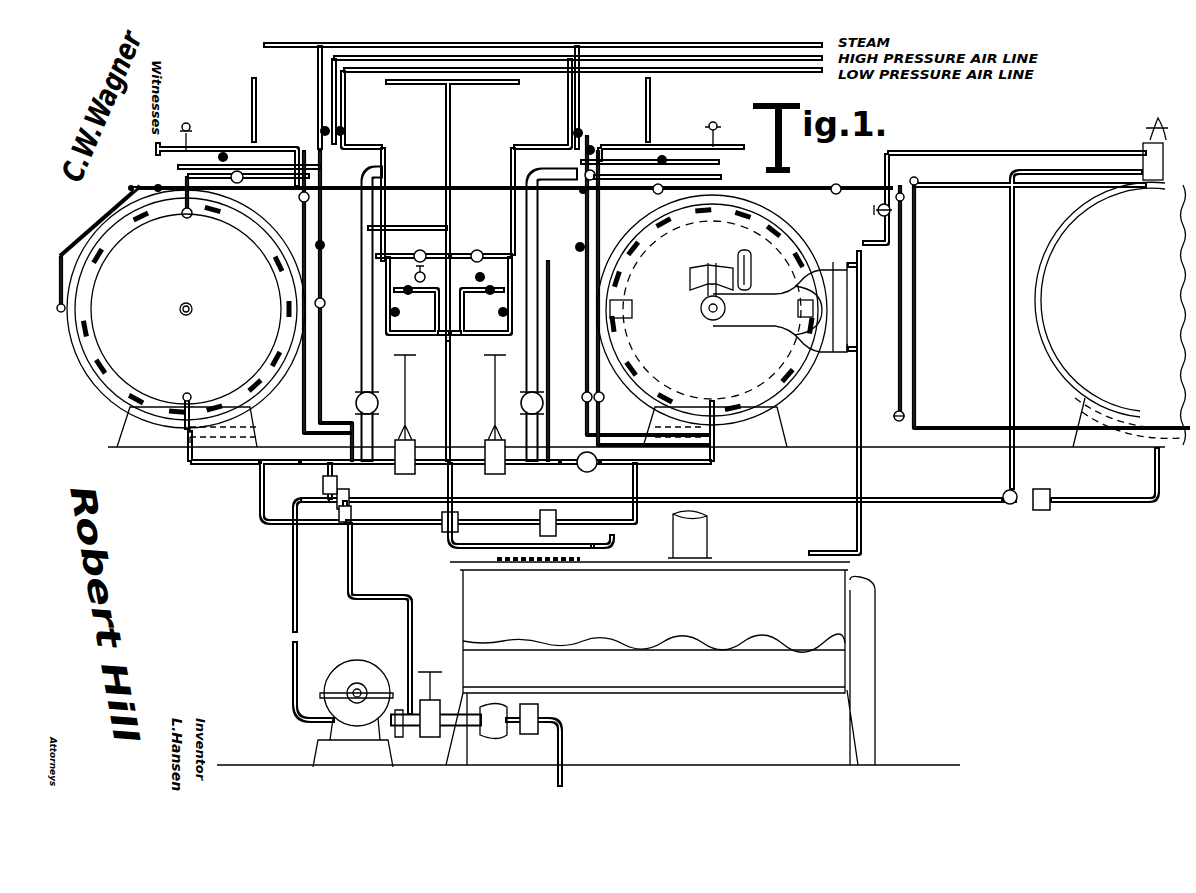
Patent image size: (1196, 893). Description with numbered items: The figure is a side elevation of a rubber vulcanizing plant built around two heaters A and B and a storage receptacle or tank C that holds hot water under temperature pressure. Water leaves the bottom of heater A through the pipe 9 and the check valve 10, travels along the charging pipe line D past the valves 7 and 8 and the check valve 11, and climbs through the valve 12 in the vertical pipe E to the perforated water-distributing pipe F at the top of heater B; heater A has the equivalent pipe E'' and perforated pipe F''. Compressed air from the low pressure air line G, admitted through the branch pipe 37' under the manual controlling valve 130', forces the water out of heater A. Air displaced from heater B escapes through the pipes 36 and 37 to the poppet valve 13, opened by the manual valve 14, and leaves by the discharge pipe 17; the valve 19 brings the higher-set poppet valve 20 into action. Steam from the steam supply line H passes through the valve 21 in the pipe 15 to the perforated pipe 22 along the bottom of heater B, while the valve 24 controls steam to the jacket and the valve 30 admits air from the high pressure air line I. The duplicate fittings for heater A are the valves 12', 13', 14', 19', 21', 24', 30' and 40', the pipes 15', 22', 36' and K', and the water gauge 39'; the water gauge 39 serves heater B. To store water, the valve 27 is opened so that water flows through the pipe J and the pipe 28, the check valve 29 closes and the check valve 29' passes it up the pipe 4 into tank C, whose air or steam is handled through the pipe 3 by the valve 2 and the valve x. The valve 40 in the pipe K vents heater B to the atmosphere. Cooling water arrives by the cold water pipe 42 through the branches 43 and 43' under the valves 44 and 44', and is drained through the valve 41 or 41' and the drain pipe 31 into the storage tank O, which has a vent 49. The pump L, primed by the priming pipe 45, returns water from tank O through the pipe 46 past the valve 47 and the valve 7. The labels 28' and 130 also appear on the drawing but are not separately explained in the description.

The heater A is at (186, 318).
The heater B is at (712, 321).
The storage receptacle C is at (1110, 314).
The charging pipe line D is at (427, 458).
The pipe E is at (555, 318).
The pipe E'' is at (356, 317).
The perforated pipe F is at (774, 292).
The perforated pipe F'' is at (169, 209).
The low pressure air line G is at (776, 78).
The steam supply line H is at (505, 48).
The high pressure air line I is at (548, 40).
The pipe J is at (445, 480).
The pipe K is at (660, 110).
The pipe K' is at (267, 110).
The pump L is at (345, 666).
The storage tank O is at (660, 662).
The valve x is at (712, 310).
The valve 2 is at (892, 210).
The pipe 3 is at (1078, 140).
The pipe 4 is at (1022, 259).
The valve 7 is at (395, 458).
The valve 8 is at (488, 474).
The pipe 9 is at (222, 470).
The check valve 10 is at (270, 473).
The check valve 11 is at (640, 470).
The valve 12 is at (520, 404).
The valve 12' is at (380, 390).
The poppet valve 13 is at (466, 271).
The poppet valve 13' is at (435, 271).
The manual controlling valve 14 is at (508, 294).
The manual controlling valve 14' is at (416, 294).
The pipe 15 is at (562, 361).
The pipe 15' is at (334, 306).
The discharge pipe 17 is at (451, 390).
The valve 19 is at (534, 305).
The valve 19' is at (394, 328).
The poppet valve 20 is at (452, 340).
The valve 21 is at (566, 243).
The valve 21' is at (335, 227).
The perforated pipe 22 is at (731, 415).
The perforated pipe 22' is at (177, 400).
The valve 24 is at (602, 146).
The valve 24' is at (374, 109).
The valve 27 is at (586, 474).
The pipe 28 is at (651, 488).
The pipe 28' is at (1103, 491).
The check valve 29 is at (1037, 519).
The check valve 29' is at (978, 482).
The valve 30 is at (597, 124).
The valve 30' is at (306, 97).
The drain pipe 31 is at (616, 548).
The pipe 36 is at (523, 116).
The pipe 36' is at (403, 204).
The pipe 37 is at (650, 153).
The branch pipe 37' is at (249, 150).
The water gauge 39 is at (646, 290).
The water gauge 39' is at (307, 291).
The valve 40 is at (669, 147).
The valve 40' is at (226, 152).
The valve 41 is at (490, 499).
The valve 41' is at (363, 526).
The cold water pipe 42 is at (451, 118).
The branch 43 is at (496, 201).
The branch 43' is at (407, 213).
The controlling valve 44 is at (481, 245).
The controlling valve 44' is at (412, 245).
The priming pipe 45 is at (352, 570).
The pipe 46 is at (290, 608).
The valve 47 is at (330, 505).
The vent 49 is at (705, 535).
The valve 130 is at (553, 97).
The manual controlling valve 130' is at (358, 101).